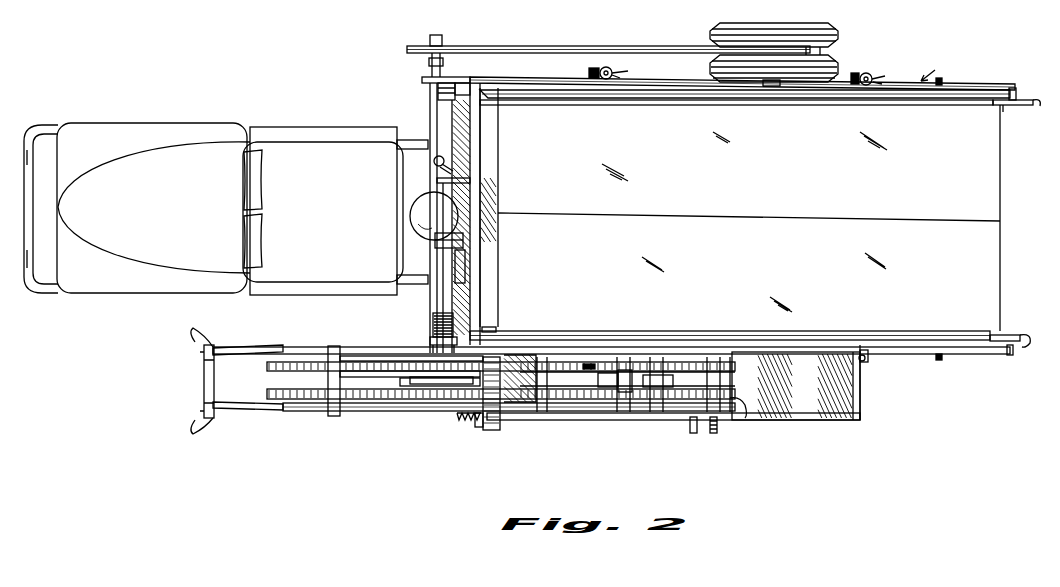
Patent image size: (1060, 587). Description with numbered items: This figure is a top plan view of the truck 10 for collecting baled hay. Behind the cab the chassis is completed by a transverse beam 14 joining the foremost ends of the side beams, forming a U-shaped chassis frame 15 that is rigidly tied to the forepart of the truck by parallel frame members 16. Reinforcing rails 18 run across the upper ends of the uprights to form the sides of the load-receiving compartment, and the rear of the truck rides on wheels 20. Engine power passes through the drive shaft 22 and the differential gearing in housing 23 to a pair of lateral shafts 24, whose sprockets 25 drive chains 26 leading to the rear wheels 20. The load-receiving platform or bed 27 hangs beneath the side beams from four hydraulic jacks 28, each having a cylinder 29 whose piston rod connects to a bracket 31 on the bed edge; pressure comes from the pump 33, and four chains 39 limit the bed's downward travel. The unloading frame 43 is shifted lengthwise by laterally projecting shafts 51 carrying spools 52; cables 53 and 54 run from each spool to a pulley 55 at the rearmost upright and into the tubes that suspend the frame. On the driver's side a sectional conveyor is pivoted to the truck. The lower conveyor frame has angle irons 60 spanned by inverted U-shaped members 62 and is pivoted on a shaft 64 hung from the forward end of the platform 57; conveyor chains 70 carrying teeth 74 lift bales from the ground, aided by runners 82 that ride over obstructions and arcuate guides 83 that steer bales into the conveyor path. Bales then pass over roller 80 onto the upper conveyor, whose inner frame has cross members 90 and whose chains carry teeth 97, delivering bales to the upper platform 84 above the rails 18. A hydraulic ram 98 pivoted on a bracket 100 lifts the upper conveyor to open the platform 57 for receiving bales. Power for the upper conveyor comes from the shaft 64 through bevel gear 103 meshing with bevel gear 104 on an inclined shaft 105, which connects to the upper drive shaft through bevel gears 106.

The truck 10 is at (221, 296).
The transverse beam 14 is at (474, 108).
The U-shaped chassis frame 15 is at (935, 67).
The parallel frame members 16 is at (421, 140).
The reinforcing rails 18 is at (989, 91).
The rear wheels 20 is at (838, 30).
The drive shaft 22 is at (411, 203).
The differential gearing housing 23 is at (424, 228).
The lateral shafts 24 is at (429, 62).
The sprockets 25 is at (412, 45).
The drive chains 26 is at (624, 50).
The load-receiving platform or bed 27 is at (742, 306).
The hydraulic jacks 28 is at (874, 76).
The cylinder 29 is at (600, 70).
The bracket 31 is at (760, 73).
The pump 33 is at (466, 272).
The chains 39 is at (944, 79).
The unloading frame 43 is at (496, 160).
The laterally projecting shafts 51 is at (441, 300).
The spools 52 is at (438, 90).
The cable 53 is at (458, 332).
The cable 54 is at (1003, 106).
The pulley 55 is at (1018, 237).
The platform 57 is at (533, 402).
The angle irons 60 is at (385, 408).
The inverted U-shaped members 62 is at (238, 350).
The shaft 64 is at (458, 411).
The conveyor chains 70 is at (324, 399).
The teeth 74 is at (268, 372).
The roller 80 is at (520, 404).
The runners 82 is at (204, 380).
The arcuate guides 83 is at (193, 331).
The platform 84 is at (799, 420).
The cross members 90 is at (604, 398).
The teeth 97 is at (588, 366).
The hydraulic ram 98 is at (629, 392).
The bracket 100 is at (677, 387).
The bevel gear 103 is at (466, 421).
The bevel gear 104 is at (478, 428).
The inclined shaft 105 is at (549, 426).
The bevel gears 106 is at (714, 424).